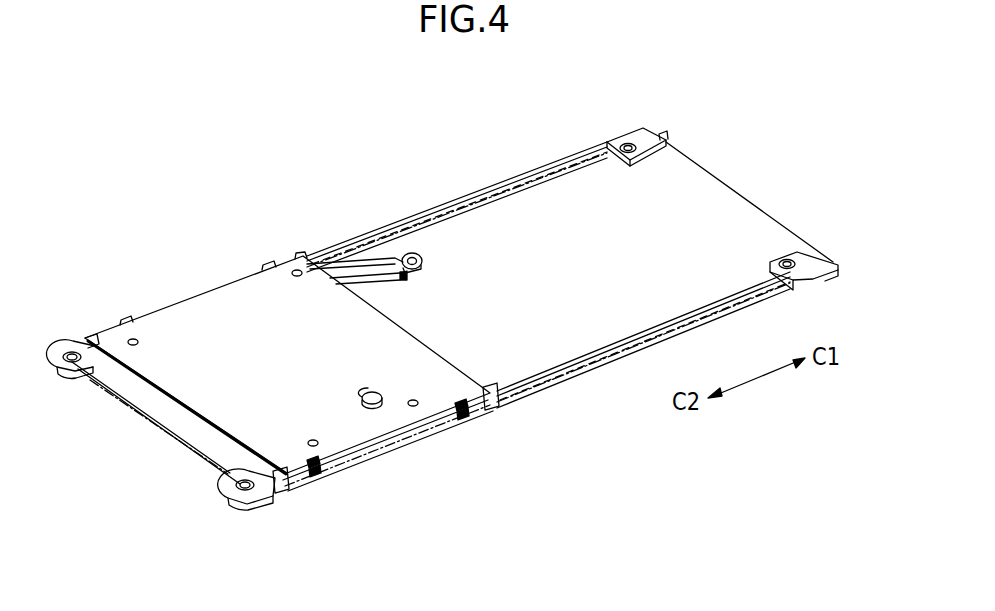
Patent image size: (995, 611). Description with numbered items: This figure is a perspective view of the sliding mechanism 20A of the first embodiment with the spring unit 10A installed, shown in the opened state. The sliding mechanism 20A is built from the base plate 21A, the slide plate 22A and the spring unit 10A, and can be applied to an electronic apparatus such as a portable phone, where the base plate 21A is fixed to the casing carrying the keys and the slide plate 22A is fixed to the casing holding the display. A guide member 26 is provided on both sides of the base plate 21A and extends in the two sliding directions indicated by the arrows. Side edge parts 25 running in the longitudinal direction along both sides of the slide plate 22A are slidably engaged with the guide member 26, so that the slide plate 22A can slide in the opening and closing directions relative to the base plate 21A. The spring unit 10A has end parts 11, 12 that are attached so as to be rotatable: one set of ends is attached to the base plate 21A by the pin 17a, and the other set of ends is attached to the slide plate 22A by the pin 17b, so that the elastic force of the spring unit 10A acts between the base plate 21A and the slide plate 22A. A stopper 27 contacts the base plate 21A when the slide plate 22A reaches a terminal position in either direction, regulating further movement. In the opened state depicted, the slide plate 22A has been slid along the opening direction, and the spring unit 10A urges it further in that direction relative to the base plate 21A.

The sliding mechanism 20A is at (579, 73).
The base plate 21A is at (222, 304).
The slide plate 22A is at (705, 180).
The spring unit 10A is at (370, 254).
The end part of the spring unit 11 is at (370, 278).
The end part of the spring unit 12 is at (347, 275).
The pin 17a is at (420, 255).
The pin 17b is at (376, 393).
The side edge part 25 is at (511, 190).
The guide member 26 is at (367, 450).
The stopper 27 is at (85, 337).